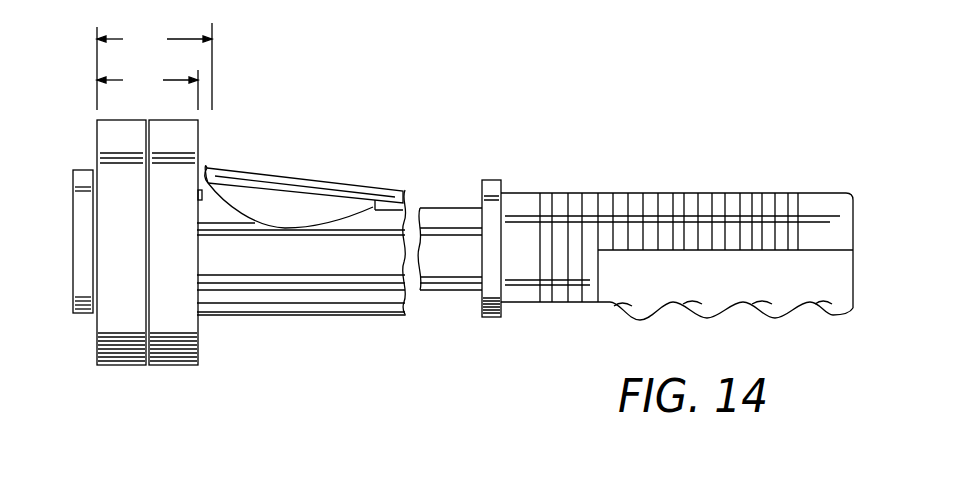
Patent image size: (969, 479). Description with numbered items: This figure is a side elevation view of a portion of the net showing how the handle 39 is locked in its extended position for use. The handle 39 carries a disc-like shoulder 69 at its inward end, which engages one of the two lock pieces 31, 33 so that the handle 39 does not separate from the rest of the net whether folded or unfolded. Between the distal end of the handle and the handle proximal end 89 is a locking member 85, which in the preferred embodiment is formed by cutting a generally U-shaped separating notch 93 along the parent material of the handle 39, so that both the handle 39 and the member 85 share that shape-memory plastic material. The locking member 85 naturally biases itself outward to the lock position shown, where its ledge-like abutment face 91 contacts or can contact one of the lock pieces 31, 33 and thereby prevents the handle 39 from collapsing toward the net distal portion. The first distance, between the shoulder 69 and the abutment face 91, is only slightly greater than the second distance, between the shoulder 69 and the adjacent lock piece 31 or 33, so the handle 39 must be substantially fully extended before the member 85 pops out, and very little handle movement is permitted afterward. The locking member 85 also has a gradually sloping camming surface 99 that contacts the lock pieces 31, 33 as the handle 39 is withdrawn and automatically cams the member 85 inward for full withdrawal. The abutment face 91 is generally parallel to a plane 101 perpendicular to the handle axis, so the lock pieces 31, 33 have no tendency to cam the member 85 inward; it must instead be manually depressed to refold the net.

The plane 101 is at (213, 57).
The disc-like shoulder 69 is at (74, 314).
The lock piece 31 is at (122, 366).
The lock piece 33 is at (172, 366).
The handle 39 is at (393, 217).
The camming surface 99 is at (328, 195).
The locking member 85 is at (258, 207).
The abutment face 91 is at (206, 165).
The separating notch 93 is at (270, 228).
The handle proximal end 89 is at (705, 193).